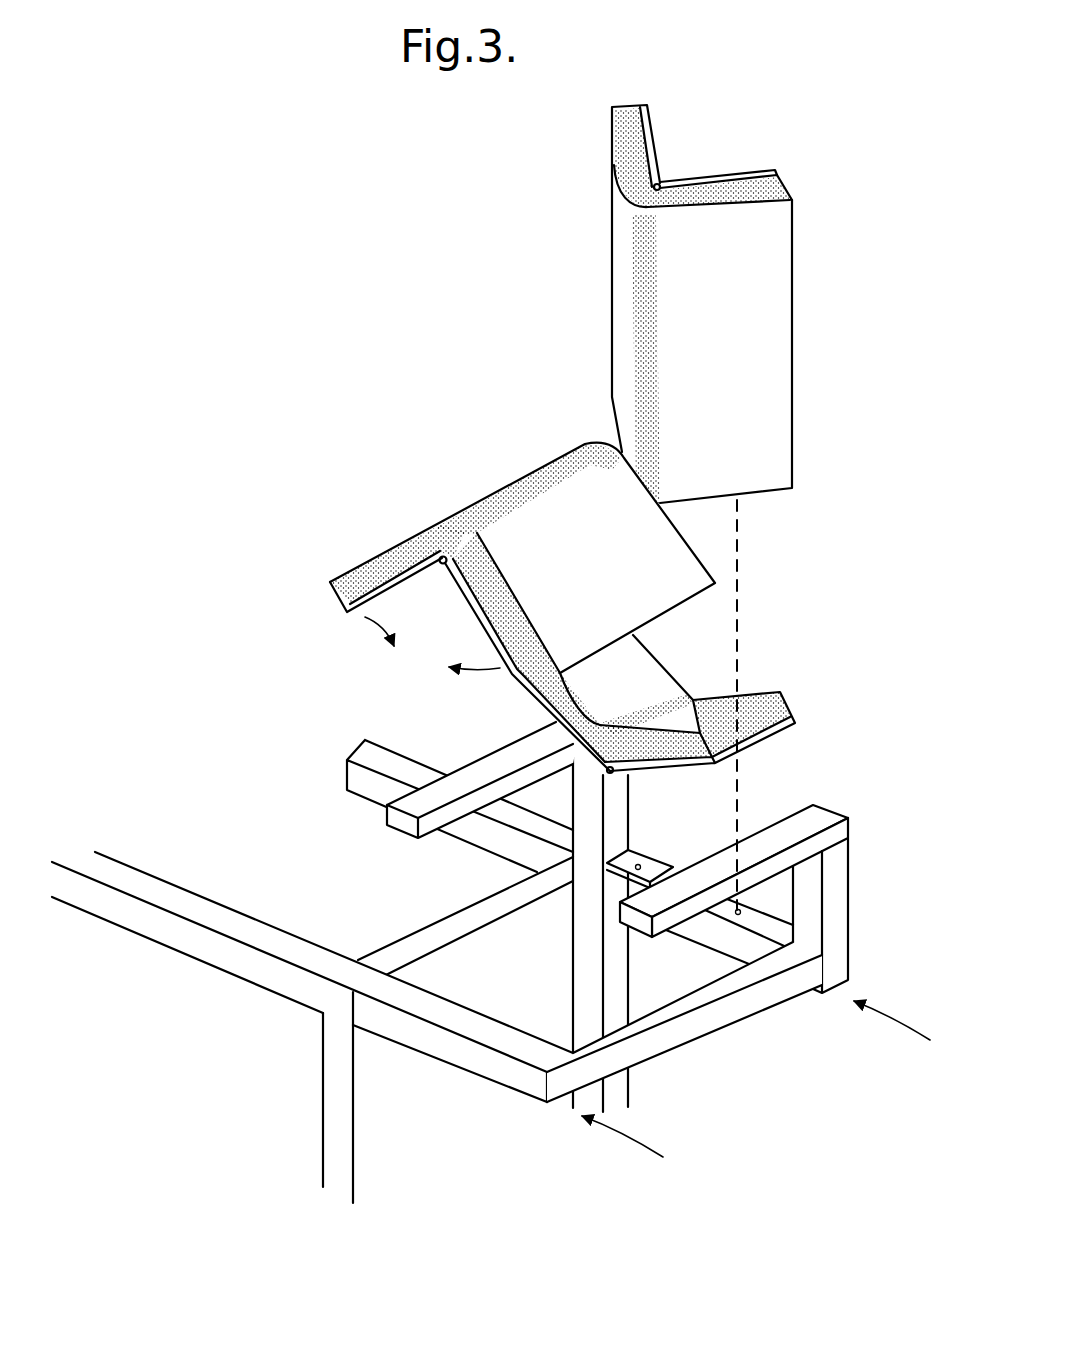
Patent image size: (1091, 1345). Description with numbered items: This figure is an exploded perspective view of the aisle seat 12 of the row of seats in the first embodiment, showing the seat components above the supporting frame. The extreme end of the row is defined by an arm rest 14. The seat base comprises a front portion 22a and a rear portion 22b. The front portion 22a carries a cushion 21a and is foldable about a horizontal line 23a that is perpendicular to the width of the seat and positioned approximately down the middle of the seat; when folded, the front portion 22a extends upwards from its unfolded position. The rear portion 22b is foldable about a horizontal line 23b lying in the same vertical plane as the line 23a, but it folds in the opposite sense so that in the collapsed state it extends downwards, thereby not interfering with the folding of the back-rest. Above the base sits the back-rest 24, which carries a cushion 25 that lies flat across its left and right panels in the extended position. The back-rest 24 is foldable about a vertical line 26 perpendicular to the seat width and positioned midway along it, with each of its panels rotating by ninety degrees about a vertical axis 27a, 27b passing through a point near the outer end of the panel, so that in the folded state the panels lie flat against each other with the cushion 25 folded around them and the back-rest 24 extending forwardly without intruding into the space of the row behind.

The aisle seat 12 is at (514, 411).
The arm rest 14 is at (422, 797).
The cushion 21a is at (363, 562).
The front portion 22a is at (597, 497).
The rear portion 22b is at (672, 688).
The horizontal line 23a is at (445, 564).
The horizontal line 23b is at (615, 805).
The back-rest 24 is at (783, 282).
The cushion 25 is at (777, 232).
The vertical line 26 is at (654, 186).
The vertical axis 27a is at (648, 118).
The vertical axis 27b is at (761, 172).